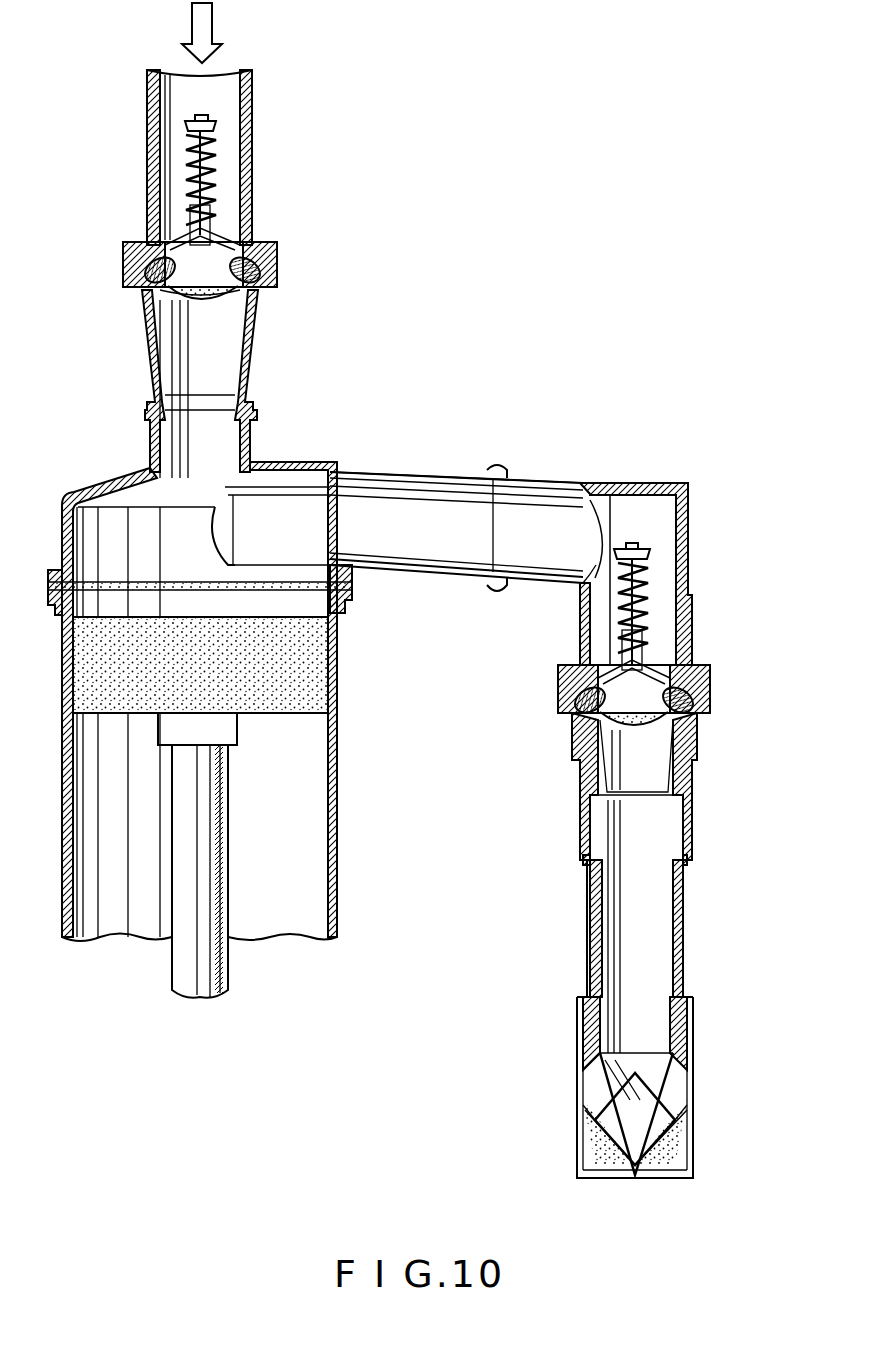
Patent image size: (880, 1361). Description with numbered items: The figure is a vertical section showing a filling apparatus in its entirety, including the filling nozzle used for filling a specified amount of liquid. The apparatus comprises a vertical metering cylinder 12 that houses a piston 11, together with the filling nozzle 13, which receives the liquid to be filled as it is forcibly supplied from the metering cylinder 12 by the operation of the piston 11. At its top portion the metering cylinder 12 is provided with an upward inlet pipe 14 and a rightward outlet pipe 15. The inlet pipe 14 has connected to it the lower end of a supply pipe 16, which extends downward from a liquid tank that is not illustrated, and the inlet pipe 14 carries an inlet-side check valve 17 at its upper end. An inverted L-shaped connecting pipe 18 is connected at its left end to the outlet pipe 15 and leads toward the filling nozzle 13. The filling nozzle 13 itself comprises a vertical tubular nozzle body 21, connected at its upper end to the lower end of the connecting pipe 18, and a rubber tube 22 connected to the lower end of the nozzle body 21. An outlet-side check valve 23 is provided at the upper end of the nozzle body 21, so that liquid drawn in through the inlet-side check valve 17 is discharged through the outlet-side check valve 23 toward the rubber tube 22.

The piston 11 is at (142, 713).
The metering cylinder 12 is at (352, 823).
The filling nozzle 13 is at (724, 1066).
The inlet pipe 14 is at (252, 350).
The outlet pipe 15 is at (418, 476).
The supply pipe 16 is at (255, 190).
The inlet-side check valve 17 is at (205, 295).
The connecting pipe 18 is at (548, 483).
The nozzle body 21 is at (690, 920).
The rubber tube 22 is at (693, 1136).
The outlet-side check valve 23 is at (645, 718).